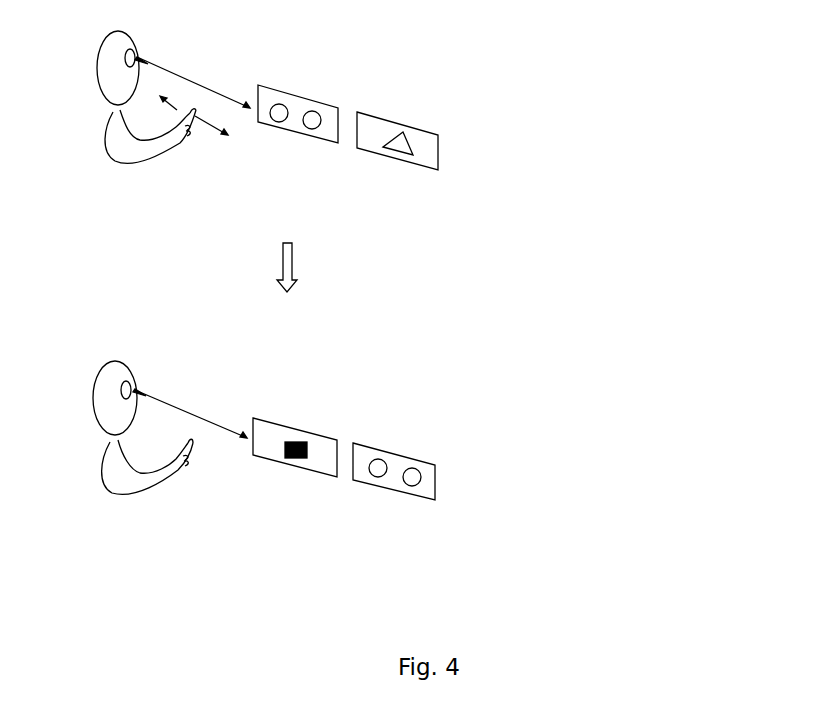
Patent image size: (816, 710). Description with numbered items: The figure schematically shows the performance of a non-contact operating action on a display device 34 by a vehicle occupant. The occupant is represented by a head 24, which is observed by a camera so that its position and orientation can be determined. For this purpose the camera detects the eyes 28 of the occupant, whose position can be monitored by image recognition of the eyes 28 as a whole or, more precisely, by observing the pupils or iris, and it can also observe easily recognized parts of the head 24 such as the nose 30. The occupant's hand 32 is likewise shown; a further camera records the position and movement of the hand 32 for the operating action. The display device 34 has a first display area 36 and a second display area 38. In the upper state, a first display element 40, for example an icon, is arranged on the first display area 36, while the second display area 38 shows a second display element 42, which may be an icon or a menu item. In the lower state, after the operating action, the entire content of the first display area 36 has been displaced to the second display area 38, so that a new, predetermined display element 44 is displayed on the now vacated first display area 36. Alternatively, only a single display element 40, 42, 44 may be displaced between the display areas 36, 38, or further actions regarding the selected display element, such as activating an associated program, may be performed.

The head 24 is at (108, 80).
The eyes 28 is at (134, 54).
The nose 30 is at (150, 66).
The hand 32 is at (180, 143).
The display device 34 is at (373, 100).
The first display area 36 is at (297, 133).
The second display area 38 is at (395, 157).
The first display element 40 is at (316, 114).
The second display element 42 is at (403, 133).
The predetermined display element 44 is at (307, 445).